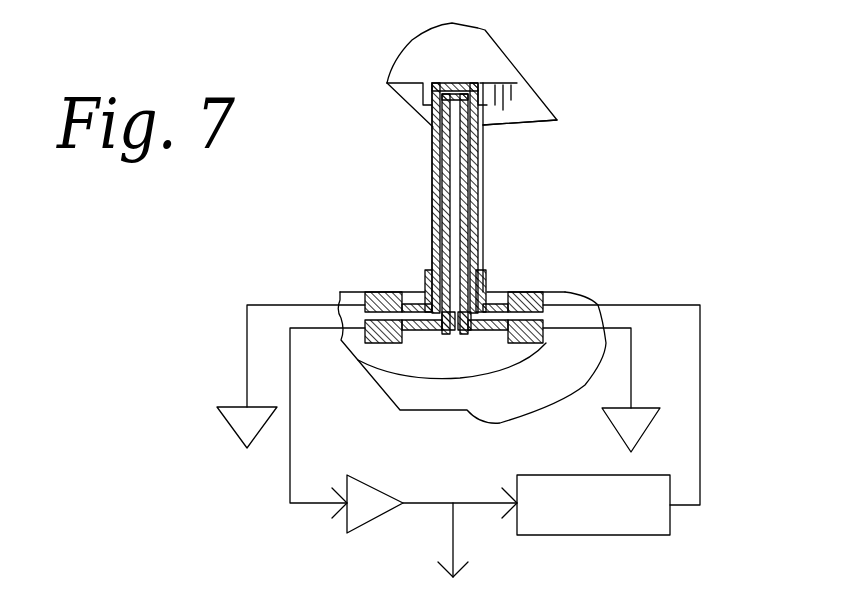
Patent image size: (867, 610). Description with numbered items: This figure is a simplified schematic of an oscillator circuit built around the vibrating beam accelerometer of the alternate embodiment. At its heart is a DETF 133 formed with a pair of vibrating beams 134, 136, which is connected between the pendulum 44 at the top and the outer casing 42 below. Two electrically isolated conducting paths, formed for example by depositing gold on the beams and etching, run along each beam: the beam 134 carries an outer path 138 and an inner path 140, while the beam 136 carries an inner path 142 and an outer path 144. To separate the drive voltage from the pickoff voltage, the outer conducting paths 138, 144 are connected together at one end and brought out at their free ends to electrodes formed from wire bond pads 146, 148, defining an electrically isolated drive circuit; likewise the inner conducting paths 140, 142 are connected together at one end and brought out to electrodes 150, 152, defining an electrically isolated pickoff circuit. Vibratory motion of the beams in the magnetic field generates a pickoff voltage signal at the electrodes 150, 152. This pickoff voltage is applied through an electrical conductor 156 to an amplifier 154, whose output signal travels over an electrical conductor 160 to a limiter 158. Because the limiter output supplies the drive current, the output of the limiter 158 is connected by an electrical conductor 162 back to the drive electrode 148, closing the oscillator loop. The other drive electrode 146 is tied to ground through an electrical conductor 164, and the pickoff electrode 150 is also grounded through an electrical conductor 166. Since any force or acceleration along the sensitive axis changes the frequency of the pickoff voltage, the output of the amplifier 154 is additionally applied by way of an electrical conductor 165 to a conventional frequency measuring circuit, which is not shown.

The outer casing 42 is at (367, 358).
The pendulum 44 is at (492, 53).
The DETF 133 is at (633, 182).
The vibrating beam 134 is at (424, 188).
The vibrating beam 136 is at (487, 203).
The outer path 138 is at (432, 152).
The inner path 140 is at (433, 238).
The inner path 142 is at (472, 233).
The outer path 144 is at (483, 160).
The wire bond pad 146 is at (375, 293).
The wire bond pad 148 is at (530, 292).
The electrode 150 is at (546, 343).
The electrode 152 is at (405, 342).
The amplifier 154 is at (372, 480).
The electrical conductor 156 is at (290, 470).
The limiter 158 is at (672, 527).
The electrical conductor 160 is at (473, 503).
The electrical conductor 162 is at (700, 395).
The electrical conductor 164 is at (277, 305).
The electrical conductor 165 is at (453, 520).
The electrical conductor 166 is at (632, 384).